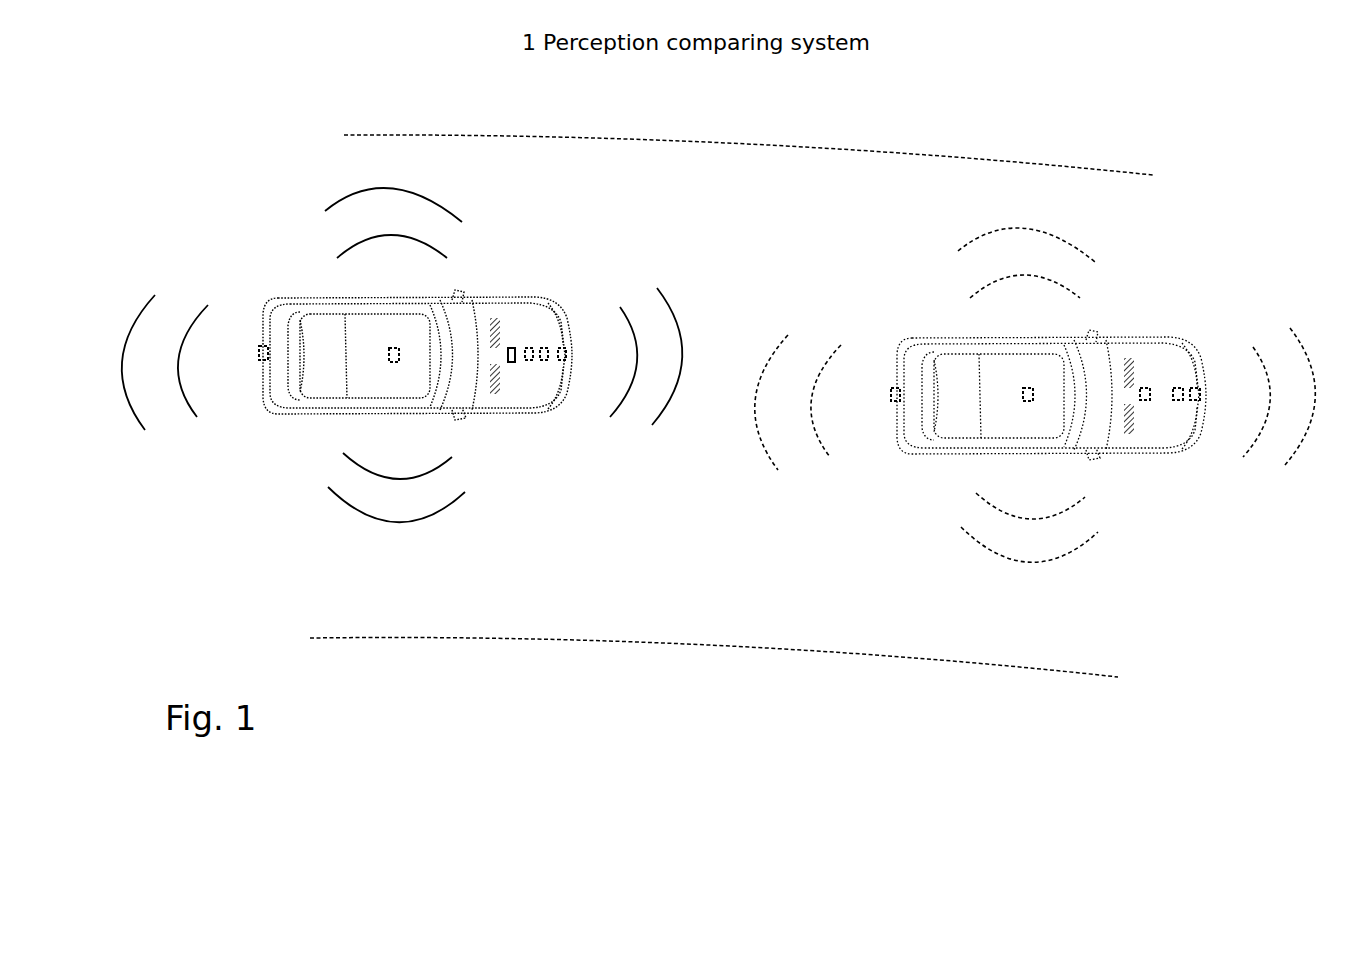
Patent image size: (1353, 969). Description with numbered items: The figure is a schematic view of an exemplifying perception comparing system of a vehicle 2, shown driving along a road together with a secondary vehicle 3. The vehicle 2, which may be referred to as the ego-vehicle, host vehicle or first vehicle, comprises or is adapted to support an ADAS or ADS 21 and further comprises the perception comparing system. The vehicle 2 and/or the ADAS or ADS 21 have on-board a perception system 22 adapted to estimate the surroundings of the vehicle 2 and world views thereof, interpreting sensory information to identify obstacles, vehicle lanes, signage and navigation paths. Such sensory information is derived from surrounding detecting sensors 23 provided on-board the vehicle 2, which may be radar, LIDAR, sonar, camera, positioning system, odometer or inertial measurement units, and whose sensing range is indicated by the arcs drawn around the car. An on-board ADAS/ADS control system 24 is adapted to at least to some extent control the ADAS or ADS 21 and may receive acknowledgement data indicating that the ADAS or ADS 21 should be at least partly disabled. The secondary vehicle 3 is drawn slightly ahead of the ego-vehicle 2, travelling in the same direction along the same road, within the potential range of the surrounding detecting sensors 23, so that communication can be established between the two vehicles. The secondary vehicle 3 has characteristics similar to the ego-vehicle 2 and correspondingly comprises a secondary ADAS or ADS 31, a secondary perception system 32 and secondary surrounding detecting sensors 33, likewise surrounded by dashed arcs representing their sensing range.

The vehicle 2 is at (257, 292).
The secondary vehicle 3 is at (890, 333).
The ADAS or ADS 21 is at (551, 362).
The perception system 22 is at (512, 363).
The surrounding detecting sensors 23 is at (393, 363).
The ADAS/ADS control system 24 is at (535, 363).
The secondary ADAS or ADS 31 is at (1178, 403).
The secondary perception system 32 is at (1146, 402).
The secondary surrounding detecting sensors 33 is at (1023, 405).